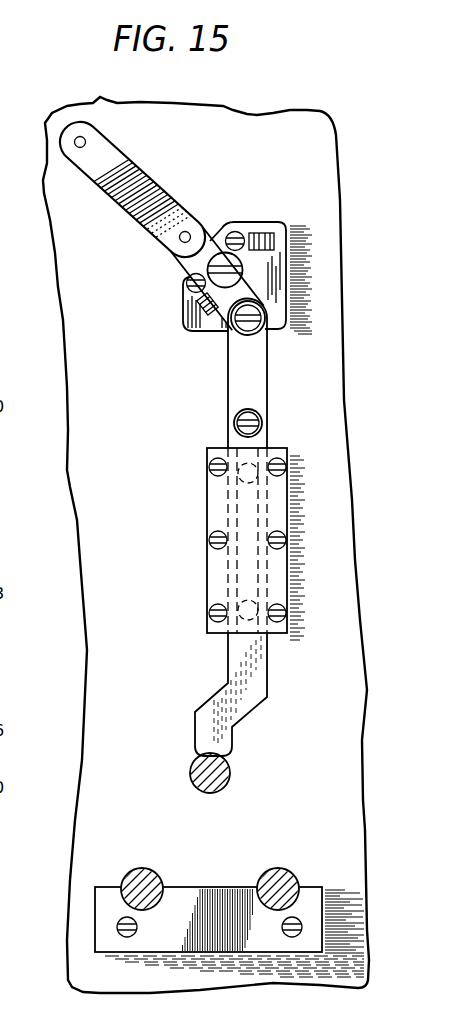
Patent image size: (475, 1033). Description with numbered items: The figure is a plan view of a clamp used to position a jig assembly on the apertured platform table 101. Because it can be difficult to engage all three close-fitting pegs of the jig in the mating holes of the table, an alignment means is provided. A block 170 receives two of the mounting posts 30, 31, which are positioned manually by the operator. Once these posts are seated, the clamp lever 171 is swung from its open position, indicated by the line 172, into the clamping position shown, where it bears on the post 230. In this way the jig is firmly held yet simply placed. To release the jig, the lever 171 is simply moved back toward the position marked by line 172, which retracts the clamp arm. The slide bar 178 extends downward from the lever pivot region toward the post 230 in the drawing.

The platform table 101 is at (108, 975).
The block 170 is at (108, 913).
The clamp lever 171 is at (133, 168).
The open position line 172 is at (90, 430).
The slide bar 178 is at (203, 724).
The post 230 is at (220, 777).
The mounting post 30 is at (279, 882).
The mounting post 31 is at (143, 876).